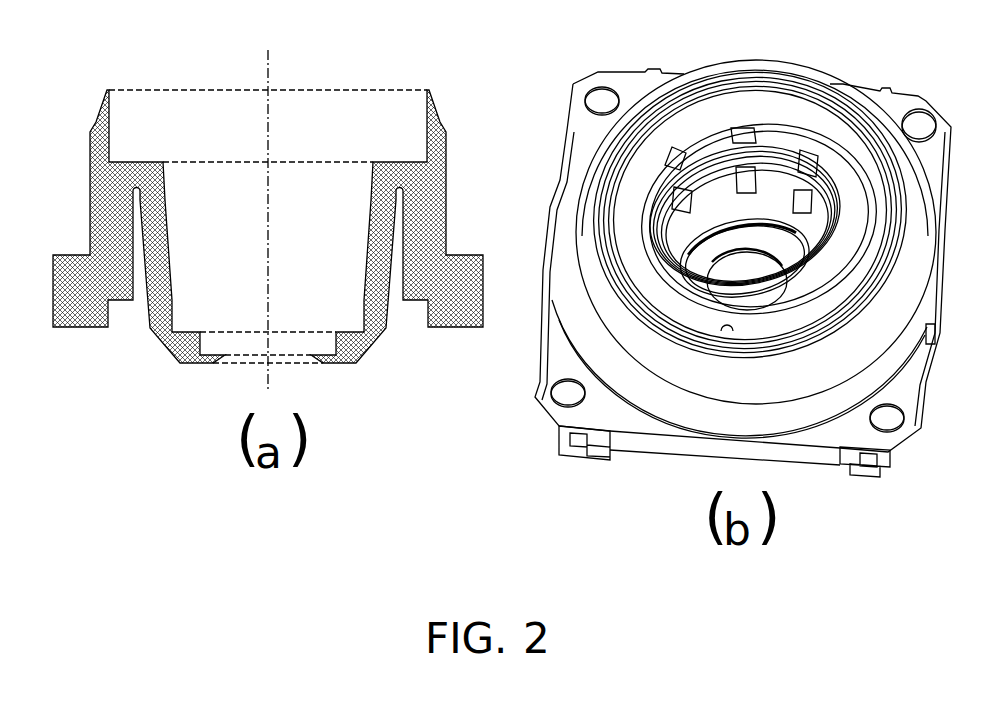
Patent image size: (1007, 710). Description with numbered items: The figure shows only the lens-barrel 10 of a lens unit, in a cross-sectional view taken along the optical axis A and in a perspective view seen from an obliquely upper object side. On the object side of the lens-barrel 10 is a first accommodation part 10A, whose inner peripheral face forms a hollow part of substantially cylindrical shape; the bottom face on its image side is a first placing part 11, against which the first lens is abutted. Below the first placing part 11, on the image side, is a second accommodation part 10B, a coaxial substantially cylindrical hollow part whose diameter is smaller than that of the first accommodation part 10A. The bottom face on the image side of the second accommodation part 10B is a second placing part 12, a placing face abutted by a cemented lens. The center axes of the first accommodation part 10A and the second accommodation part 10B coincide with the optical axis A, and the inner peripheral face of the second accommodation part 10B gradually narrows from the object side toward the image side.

The lens-barrel 10 is at (88, 158).
The first accommodation part 10A is at (398, 142).
The second accommodation part 10B is at (330, 282).
The first placing part 11 is at (137, 160).
The second placing part 12 is at (188, 328).
The optical axis A is at (268, 55).